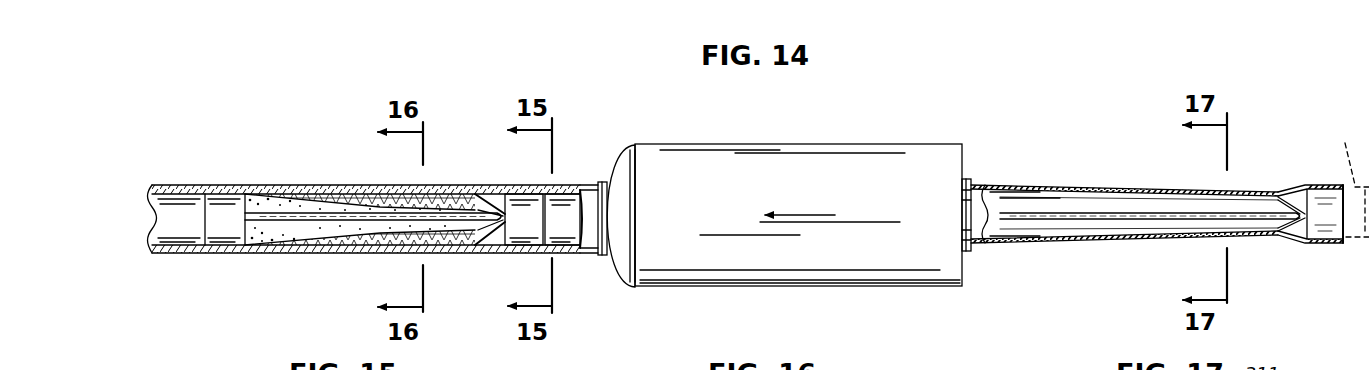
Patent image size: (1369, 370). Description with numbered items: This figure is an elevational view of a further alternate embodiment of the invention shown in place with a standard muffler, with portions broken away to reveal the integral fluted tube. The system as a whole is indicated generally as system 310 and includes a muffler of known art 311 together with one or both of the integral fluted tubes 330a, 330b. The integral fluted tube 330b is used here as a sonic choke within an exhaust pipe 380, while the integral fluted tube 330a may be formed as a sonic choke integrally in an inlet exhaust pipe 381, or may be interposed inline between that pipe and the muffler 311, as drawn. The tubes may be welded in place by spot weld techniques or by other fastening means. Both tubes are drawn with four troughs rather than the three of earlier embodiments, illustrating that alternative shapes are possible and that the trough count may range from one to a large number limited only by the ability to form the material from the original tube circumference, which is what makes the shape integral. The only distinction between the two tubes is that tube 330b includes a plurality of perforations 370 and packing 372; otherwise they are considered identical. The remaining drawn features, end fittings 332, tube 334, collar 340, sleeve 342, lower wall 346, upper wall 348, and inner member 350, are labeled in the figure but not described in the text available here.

The system 310 is at (864, 120).
The muffler 311 is at (773, 148).
The integral fluted tube 330a is at (1062, 184).
The integral fluted tube 330b is at (298, 182).
The end fitting 332 is at (550, 197).
The outer tube 334 is at (203, 233).
The collar 340 is at (526, 189).
The tube wall sleeve 342 is at (221, 189).
The lower funnel wall 346 is at (488, 249).
The upper funnel wall 348 is at (480, 236).
The inner rod 350 is at (345, 244).
The perforations 370 is at (257, 238).
The packing 372 is at (382, 196).
The exhaust pipe 380 is at (186, 186).
The inlet exhaust pipe 381 is at (1342, 178).